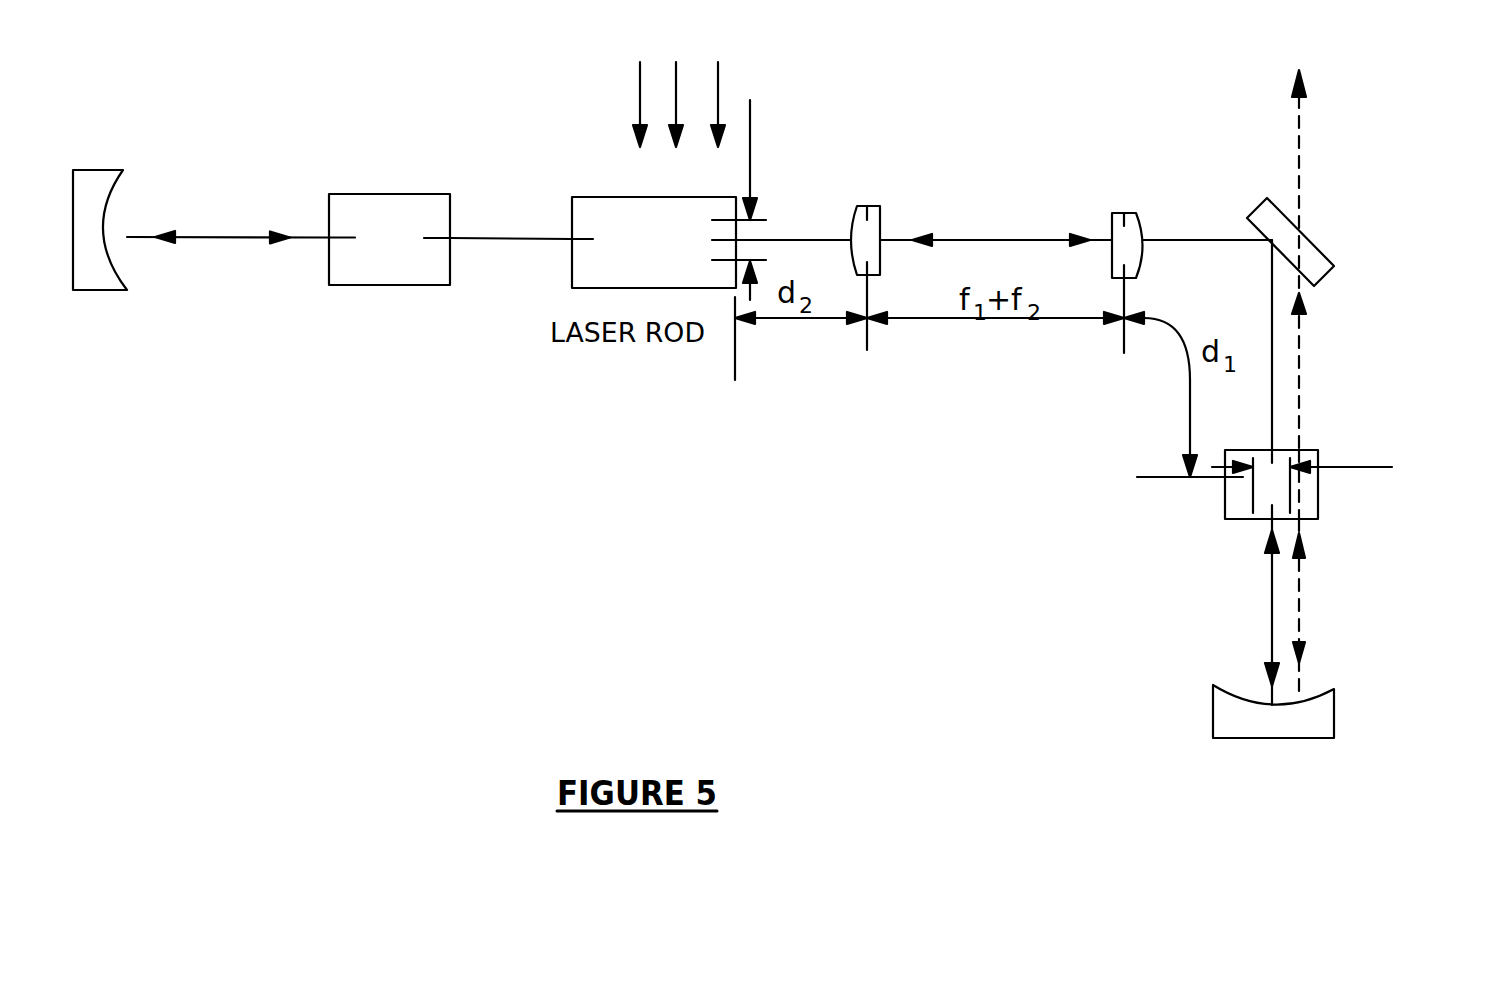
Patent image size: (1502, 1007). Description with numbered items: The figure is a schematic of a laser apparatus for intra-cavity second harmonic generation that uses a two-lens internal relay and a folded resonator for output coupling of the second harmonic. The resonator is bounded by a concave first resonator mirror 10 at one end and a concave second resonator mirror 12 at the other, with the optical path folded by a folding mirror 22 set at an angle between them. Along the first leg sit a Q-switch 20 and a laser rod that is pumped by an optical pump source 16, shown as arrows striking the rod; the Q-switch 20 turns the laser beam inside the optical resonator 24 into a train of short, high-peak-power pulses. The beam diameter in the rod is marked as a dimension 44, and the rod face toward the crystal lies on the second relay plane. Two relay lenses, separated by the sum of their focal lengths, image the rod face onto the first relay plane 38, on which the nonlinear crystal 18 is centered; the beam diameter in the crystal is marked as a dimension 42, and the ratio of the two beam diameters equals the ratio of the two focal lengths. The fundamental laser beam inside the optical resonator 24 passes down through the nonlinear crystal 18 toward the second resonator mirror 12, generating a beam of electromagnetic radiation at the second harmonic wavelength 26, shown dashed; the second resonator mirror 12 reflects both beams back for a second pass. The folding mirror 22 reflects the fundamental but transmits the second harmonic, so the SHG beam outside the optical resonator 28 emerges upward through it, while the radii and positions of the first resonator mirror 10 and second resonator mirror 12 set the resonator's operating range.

The first resonator mirror 10 is at (85, 175).
The Q-switch 20 is at (362, 197).
The optical pump source 16 is at (636, 100).
The laser rod beam diameter D2 dimension 44 is at (752, 128).
The folding mirror 22 is at (1305, 250).
The SHG beam outside the optical resonator 28 is at (1302, 108).
The nonlinear crystal 18 is at (1303, 450).
The crystal beam diameter D1 dimension 42 is at (1383, 466).
The first relay plane 38 is at (1168, 479).
The laser beam inside the optical resonator 24 is at (1268, 620).
The beam of electromagnetic radiation at the second harmonic wavelength 26 is at (1300, 625).
The second resonator mirror 12 is at (1290, 732).